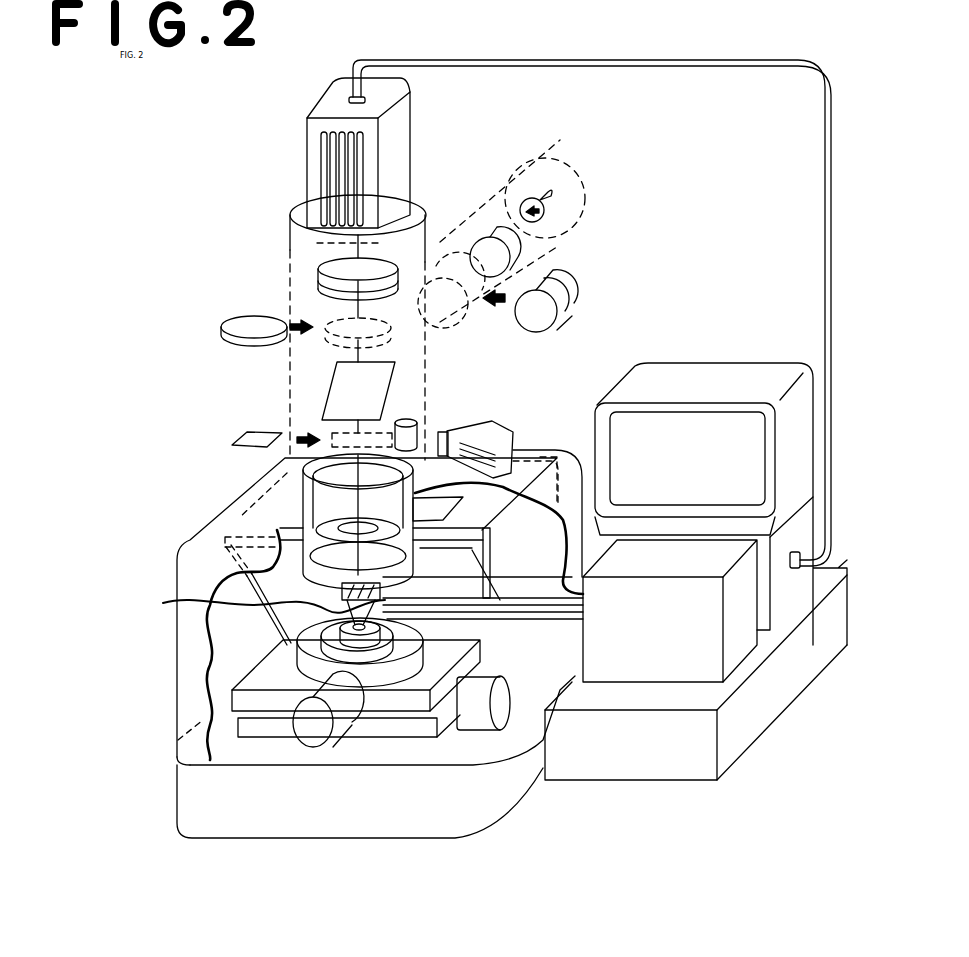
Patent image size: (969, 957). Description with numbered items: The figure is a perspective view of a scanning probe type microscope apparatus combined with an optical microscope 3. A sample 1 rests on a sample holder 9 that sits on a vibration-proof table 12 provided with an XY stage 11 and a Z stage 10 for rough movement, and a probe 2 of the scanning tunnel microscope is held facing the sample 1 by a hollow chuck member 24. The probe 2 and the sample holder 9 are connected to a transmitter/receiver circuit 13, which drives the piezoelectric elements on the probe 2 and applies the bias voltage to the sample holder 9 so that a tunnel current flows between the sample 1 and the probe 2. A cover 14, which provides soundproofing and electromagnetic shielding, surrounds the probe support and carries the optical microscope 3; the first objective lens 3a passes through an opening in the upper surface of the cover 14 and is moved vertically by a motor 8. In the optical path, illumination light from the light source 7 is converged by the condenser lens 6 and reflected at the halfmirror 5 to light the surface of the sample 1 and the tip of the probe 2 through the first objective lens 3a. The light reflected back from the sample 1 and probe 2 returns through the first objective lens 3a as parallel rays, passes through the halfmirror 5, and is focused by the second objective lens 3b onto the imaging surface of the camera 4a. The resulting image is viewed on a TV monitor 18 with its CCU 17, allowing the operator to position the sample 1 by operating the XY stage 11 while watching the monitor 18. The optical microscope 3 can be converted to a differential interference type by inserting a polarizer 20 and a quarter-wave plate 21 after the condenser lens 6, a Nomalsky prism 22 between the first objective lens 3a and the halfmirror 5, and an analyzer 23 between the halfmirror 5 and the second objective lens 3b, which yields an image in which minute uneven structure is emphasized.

The sample 1 is at (330, 663).
The probe 2 is at (495, 862).
The optical microscope 3 is at (377, 233).
The first objective lens 3a is at (290, 477).
The second objective lens 3b is at (333, 270).
The camera 4a is at (333, 107).
The halfmirror 5 is at (340, 390).
The condenser lens 6 is at (492, 245).
The light source 7 is at (549, 198).
The motor 8 is at (649, 409).
The sample holder 9 is at (320, 682).
The Z stage 10 is at (365, 680).
The XY stage 11 is at (408, 733).
The vibration-proof table 12 is at (507, 788).
The transmitter/receiver circuit 13 is at (735, 647).
The cover 14 is at (192, 727).
The CCU (camera control unit) 17 is at (787, 588).
The TV monitor 18 is at (797, 455).
The polarizer 20 is at (566, 281).
The quarter-wave plate 21 is at (556, 328).
The Nomalsky prism 22 is at (262, 430).
The analyzer 23 is at (250, 315).
The hollow chuck member 24 is at (277, 530).